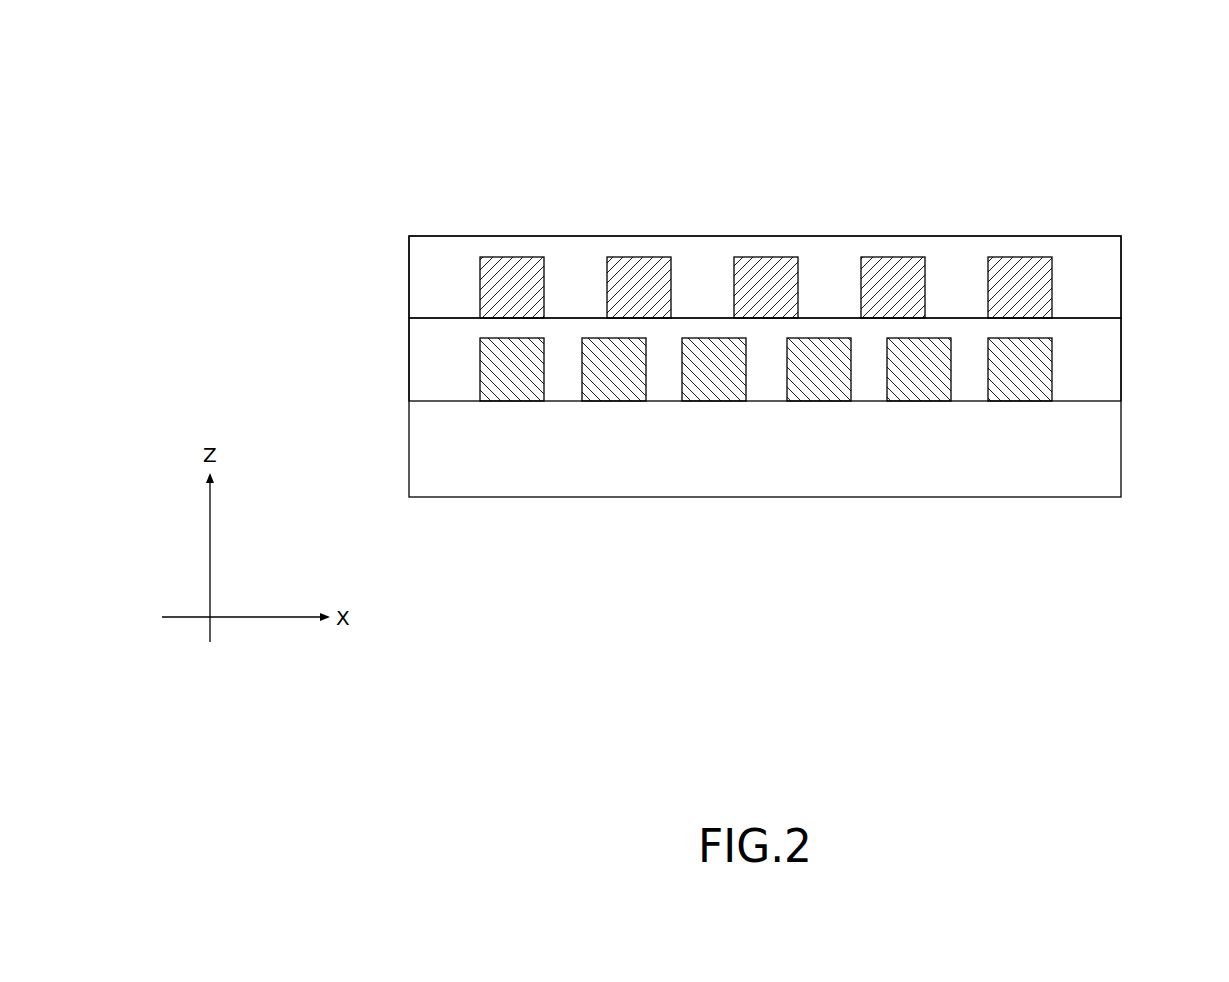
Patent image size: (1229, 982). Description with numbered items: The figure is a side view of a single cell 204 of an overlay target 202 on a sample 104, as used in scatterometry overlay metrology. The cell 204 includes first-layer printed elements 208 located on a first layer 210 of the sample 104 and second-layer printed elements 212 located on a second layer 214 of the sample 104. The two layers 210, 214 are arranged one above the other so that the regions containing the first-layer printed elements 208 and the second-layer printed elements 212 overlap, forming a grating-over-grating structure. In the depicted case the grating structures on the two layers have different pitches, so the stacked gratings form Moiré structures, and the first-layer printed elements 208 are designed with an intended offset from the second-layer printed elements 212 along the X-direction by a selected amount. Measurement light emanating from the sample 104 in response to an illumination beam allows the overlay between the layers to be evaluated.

The sample 104 is at (218, 98).
The overlay target 202 is at (302, 161).
The cell 204 is at (398, 233).
The first-layer printed elements 208 is at (486, 371).
The first layer 210 is at (1122, 364).
The second-layer printed elements 212 is at (635, 266).
The second layer 214 is at (1122, 259).